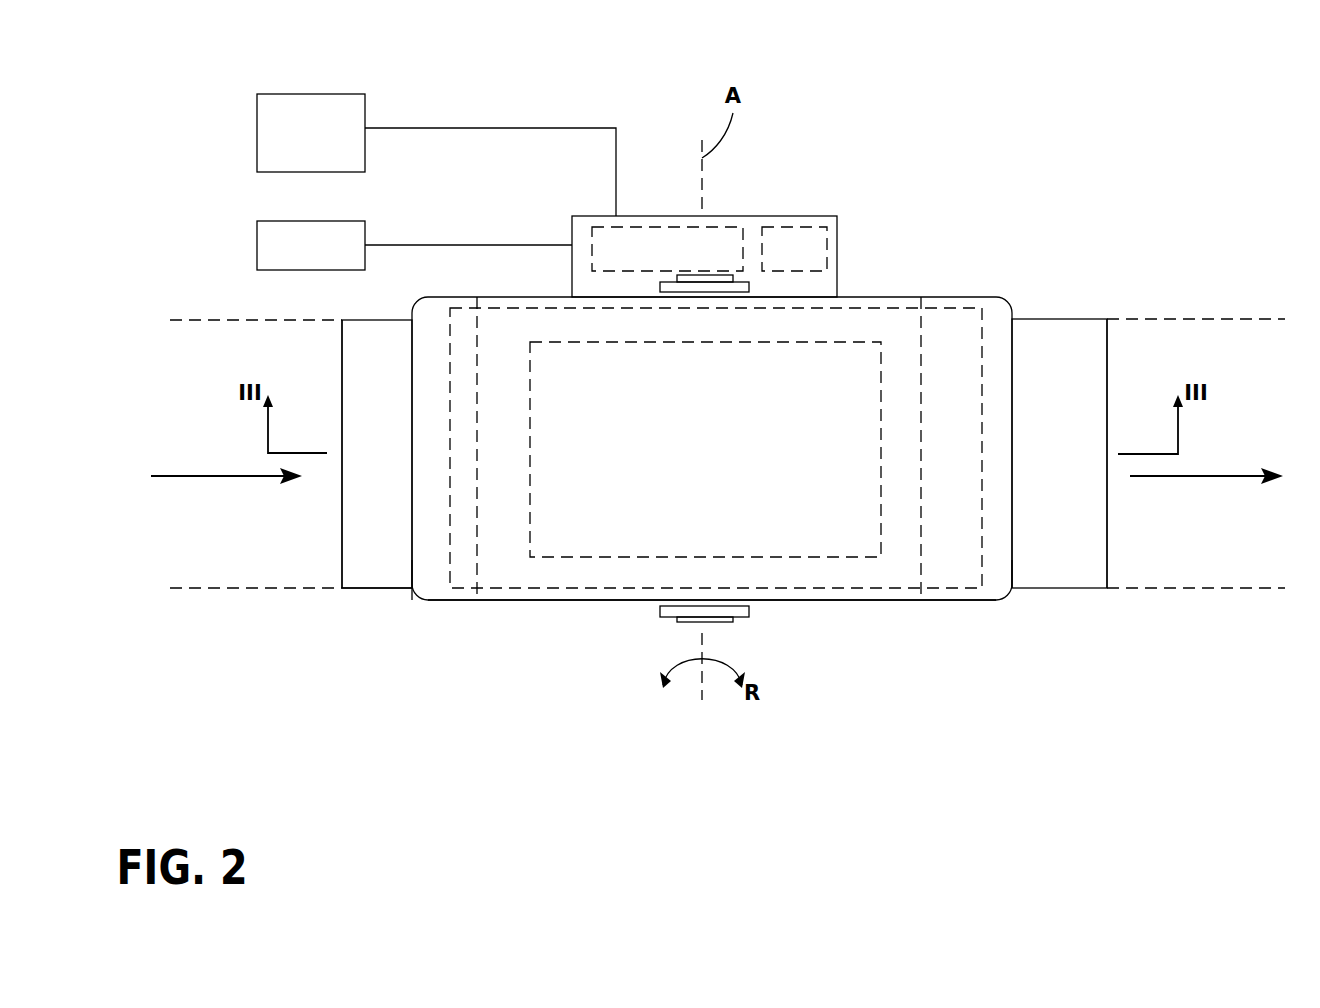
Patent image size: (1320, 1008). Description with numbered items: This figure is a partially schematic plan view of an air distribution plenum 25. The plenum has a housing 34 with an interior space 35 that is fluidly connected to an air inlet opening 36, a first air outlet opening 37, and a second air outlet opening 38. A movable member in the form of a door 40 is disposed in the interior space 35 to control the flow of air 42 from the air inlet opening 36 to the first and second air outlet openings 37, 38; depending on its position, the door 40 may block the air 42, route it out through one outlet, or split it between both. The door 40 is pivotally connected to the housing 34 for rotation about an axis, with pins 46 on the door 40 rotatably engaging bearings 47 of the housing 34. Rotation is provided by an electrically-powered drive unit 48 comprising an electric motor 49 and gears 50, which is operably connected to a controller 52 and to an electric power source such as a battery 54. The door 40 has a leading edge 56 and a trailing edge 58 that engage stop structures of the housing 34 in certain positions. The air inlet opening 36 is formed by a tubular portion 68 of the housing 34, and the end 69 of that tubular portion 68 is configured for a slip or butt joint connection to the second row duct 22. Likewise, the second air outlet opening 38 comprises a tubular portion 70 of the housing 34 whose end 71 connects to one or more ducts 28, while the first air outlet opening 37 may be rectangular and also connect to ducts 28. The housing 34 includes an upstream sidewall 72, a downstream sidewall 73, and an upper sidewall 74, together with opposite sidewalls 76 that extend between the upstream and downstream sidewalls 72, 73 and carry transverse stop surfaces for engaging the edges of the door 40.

The second row duct 22 is at (220, 320).
The air distribution plenum 25 is at (901, 295).
The ducts 28 is at (1196, 318).
The housing 34 is at (963, 295).
The interior space 35 is at (630, 560).
The air inlet opening 36 is at (342, 500).
The first air outlet opening 37 is at (550, 557).
The second air outlet opening 38 is at (1080, 500).
The door 40 is at (988, 322).
The air 42 is at (192, 476).
The pins 46 is at (733, 280).
The bearings 47 is at (663, 275).
The electrically-powered drive unit 48 is at (840, 252).
The electric motor 49 is at (812, 240).
The gears 50 is at (718, 235).
The controller 52 is at (283, 108).
The battery 54 is at (272, 238).
The leading edge 56 is at (450, 563).
The trailing edge 58 is at (982, 523).
The tubular portion 68 is at (367, 335).
The end 69 is at (342, 535).
The tubular portion 70 is at (1073, 338).
The end 71 is at (1108, 535).
The upstream sidewall 72 is at (428, 605).
The downstream sidewall 73 is at (1012, 572).
The upper sidewall 74 is at (855, 568).
The opposite sidewalls 76 is at (523, 290).